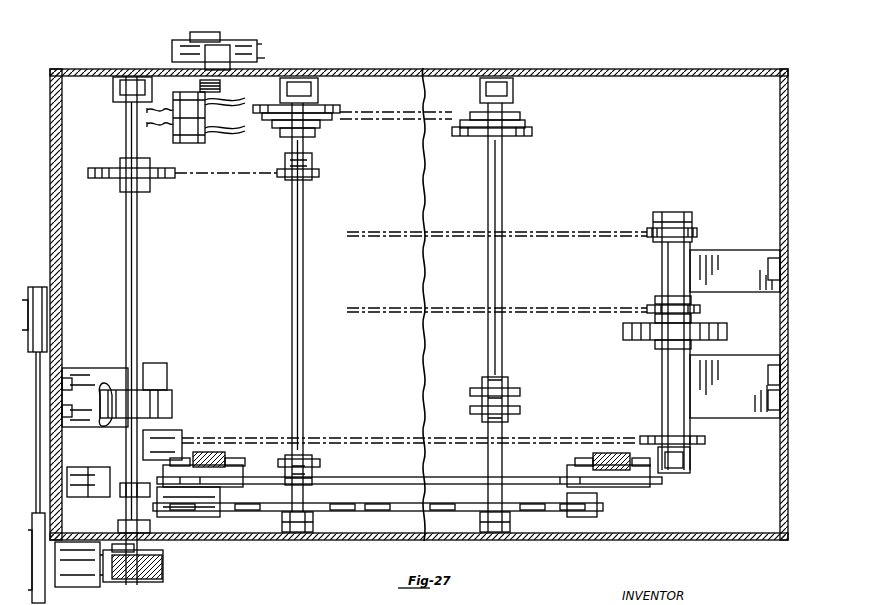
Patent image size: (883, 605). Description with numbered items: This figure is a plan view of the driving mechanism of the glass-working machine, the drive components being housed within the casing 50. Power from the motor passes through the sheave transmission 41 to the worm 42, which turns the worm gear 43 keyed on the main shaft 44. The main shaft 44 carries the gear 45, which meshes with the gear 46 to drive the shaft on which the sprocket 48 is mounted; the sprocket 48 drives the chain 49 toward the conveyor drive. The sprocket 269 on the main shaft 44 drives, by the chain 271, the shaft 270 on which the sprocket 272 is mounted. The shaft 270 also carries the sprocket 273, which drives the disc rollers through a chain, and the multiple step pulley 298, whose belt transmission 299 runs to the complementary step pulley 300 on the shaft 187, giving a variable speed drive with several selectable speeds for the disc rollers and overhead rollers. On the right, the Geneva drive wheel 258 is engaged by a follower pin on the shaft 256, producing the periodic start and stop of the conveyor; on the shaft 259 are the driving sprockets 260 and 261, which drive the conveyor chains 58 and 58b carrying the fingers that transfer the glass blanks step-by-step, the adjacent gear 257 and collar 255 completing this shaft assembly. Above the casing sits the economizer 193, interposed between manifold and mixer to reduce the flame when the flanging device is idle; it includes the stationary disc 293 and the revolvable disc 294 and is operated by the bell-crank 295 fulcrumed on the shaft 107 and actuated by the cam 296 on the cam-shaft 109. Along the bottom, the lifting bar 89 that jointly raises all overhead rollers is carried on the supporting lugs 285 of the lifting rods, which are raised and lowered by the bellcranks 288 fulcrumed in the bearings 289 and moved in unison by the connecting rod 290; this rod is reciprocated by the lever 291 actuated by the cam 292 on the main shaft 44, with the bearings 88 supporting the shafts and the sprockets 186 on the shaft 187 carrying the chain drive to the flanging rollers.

The cam 296 is at (210, 32).
The cam-shaft 109 is at (257, 44).
The shaft 107 is at (260, 58).
The bell-crank 295 is at (220, 86).
The stationary disc 293 is at (170, 128).
The economizer 193 is at (188, 143).
The revolvable disc 294 is at (215, 135).
The multiple step pulley 298 is at (335, 108).
The belt transmission 299 is at (404, 120).
The step pulley 300 is at (532, 132).
The housing 50 is at (780, 160).
The sprocket 269 is at (88, 180).
The chain 271 is at (244, 173).
The sprocket 272 is at (319, 174).
The shaft 270 is at (303, 215).
The shaft 259 is at (676, 212).
The driving sprocket 260 is at (697, 232).
The conveyor chain 58b is at (582, 218).
The conveyor chain 58 is at (583, 308).
The driving sprocket 261 is at (655, 300).
The Geneva drive wheel 258 is at (700, 311).
The gear 257 is at (727, 333).
The shaft 187 is at (502, 332).
The main shaft 44 is at (138, 330).
The sheave transmission 41 is at (38, 368).
The gear 46 is at (172, 405).
The gear 45 is at (112, 427).
The sprocket 48 is at (182, 434).
The chain 49 is at (353, 444).
The bearings 289 is at (225, 458).
The bellcrank 288 is at (243, 470).
The sprocket 273 is at (320, 463).
The connecting rod 290 is at (378, 478).
The gear 186 is at (520, 396).
The gear 255 is at (705, 439).
The shaft 256 is at (678, 473).
The lever 291 is at (84, 497).
The cam 292 is at (122, 500).
The supporting lugs 285 is at (186, 517).
The bearing 88 is at (282, 518).
The lifting bar 89 is at (393, 511).
The worm gear 43 is at (163, 572).
The worm 42 is at (116, 584).